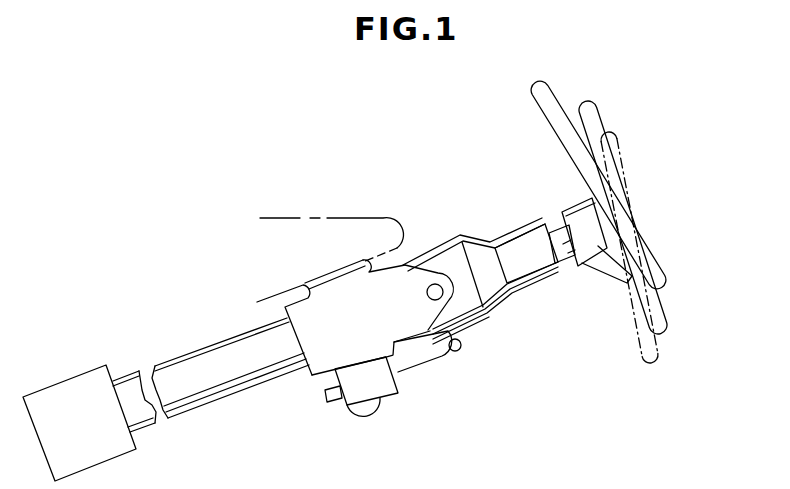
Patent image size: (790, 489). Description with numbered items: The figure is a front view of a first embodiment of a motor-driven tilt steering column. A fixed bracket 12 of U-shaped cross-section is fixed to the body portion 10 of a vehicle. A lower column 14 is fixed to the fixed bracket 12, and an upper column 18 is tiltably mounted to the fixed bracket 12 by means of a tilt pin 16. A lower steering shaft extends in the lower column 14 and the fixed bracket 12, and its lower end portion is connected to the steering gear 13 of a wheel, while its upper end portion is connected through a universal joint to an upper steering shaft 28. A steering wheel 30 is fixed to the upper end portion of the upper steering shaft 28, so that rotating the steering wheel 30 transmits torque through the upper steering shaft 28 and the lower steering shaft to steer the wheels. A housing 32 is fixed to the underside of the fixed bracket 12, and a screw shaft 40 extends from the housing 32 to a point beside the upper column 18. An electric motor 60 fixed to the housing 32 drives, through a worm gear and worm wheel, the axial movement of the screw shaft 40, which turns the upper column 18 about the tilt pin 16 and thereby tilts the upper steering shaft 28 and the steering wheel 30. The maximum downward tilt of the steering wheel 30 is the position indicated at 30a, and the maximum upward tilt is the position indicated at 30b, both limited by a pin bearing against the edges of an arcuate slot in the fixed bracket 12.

The body portion 10 is at (298, 217).
The fixed bracket 12 is at (372, 334).
The steering gear 13 is at (86, 435).
The lower column 14 is at (250, 388).
The tilt pin 16 is at (434, 283).
The upper column 18 is at (536, 272).
The upper steering shaft 28 is at (558, 238).
The steering wheel 30 is at (590, 104).
The steering wheel lower tilt position 30a is at (643, 337).
The steering wheel upper tilt position 30b is at (660, 278).
The housing 32 is at (375, 401).
The screw shaft 40 is at (436, 357).
The electric motor 60 is at (372, 413).